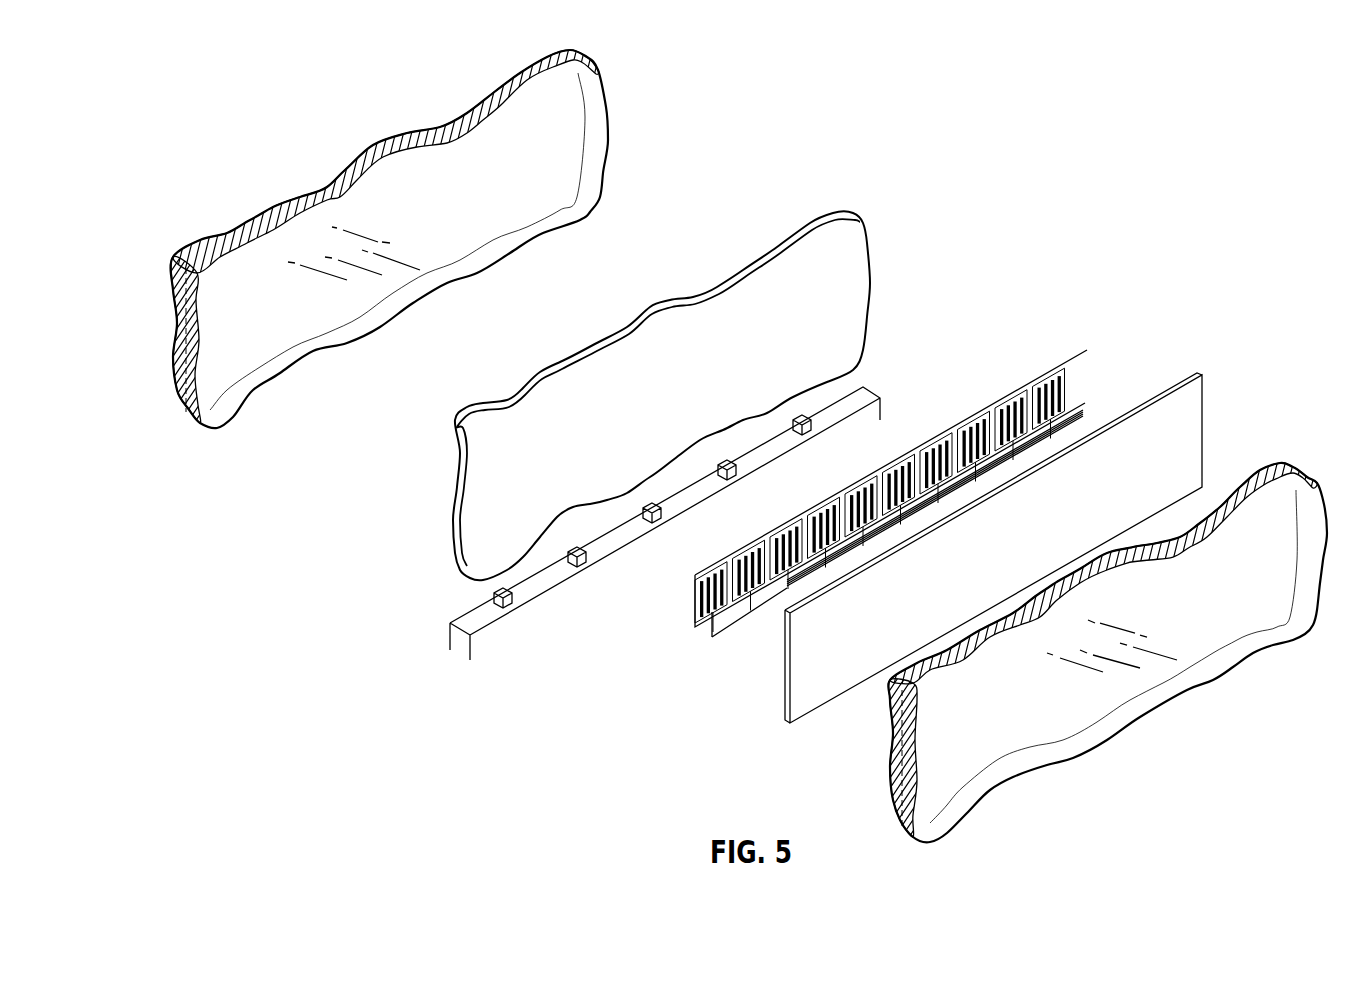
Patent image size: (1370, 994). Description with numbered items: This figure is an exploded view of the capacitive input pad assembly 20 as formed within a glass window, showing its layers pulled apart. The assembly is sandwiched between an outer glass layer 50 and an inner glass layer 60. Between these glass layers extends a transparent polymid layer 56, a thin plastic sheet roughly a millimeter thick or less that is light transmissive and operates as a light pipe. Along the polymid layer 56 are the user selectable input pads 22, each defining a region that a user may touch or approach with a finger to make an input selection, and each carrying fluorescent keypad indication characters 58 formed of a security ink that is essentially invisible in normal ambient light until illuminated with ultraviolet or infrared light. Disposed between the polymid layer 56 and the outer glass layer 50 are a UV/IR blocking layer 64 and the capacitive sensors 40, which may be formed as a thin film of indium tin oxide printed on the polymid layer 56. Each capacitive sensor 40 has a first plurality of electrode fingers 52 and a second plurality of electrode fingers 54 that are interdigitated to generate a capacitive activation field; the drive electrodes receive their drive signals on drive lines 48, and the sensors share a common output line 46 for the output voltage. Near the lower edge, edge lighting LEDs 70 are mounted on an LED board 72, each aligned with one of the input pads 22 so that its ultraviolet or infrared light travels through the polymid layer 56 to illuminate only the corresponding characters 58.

The input pad assembly 20 is at (255, 104).
The inner glass layer 60 is at (596, 80).
The user selectable input pads 22 is at (396, 393).
The keypad indication characters 58 is at (727, 238).
The polymid layer 56 is at (853, 237).
The common output line 46 is at (1074, 355).
The drive lines 48 is at (1083, 414).
The first plurality of electrode fingers 52 is at (1047, 380).
The second plurality of electrode fingers 54 is at (1043, 382).
The UV/IR blocking layer 64 is at (1182, 420).
The outer glass layer 50 is at (1312, 493).
The edge lighting LEDs 70 is at (580, 610).
The LED board 72 is at (468, 618).
The capacitive sensors 40 is at (678, 612).